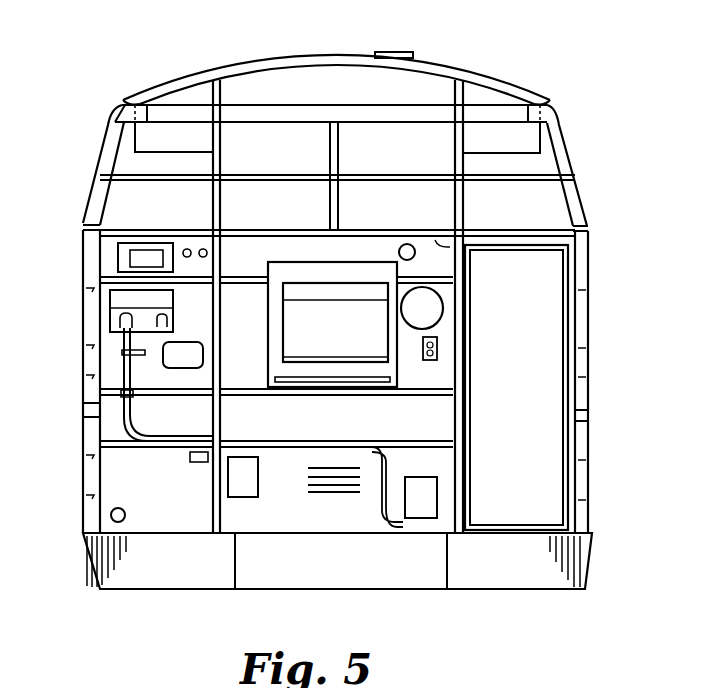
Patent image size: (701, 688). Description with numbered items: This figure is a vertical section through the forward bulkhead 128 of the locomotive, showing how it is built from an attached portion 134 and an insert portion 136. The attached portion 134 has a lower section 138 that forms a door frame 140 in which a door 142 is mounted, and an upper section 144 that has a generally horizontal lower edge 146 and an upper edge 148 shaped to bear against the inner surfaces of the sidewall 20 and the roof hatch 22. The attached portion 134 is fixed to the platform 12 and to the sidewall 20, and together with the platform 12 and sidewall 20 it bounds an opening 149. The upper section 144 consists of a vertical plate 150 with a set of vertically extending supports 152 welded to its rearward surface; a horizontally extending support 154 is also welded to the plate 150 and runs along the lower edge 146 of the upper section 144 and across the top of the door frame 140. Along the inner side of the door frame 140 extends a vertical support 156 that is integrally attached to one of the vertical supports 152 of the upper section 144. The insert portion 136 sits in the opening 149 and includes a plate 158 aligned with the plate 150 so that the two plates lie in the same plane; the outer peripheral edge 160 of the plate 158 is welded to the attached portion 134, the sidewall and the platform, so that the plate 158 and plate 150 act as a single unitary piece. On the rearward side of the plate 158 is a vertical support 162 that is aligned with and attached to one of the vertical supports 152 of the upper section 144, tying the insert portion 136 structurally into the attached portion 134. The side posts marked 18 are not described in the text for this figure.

The platform 12 is at (487, 573).
The side post 18 is at (83, 316).
The sidewall 20 is at (592, 398).
The roof hatch 22 is at (376, 52).
The forward bulkhead 128 is at (546, 160).
The attached portion 134 is at (157, 138).
The insert portion 136 is at (281, 520).
The lower section 138 is at (569, 278).
The door frame 140 is at (467, 277).
The door 142 is at (540, 475).
The upper section 144 is at (493, 163).
The lower edge 146 is at (100, 228).
The upper edge 148 is at (322, 66).
The opening 149 is at (450, 243).
The vertical plate 150 is at (263, 140).
The vertically extending supports 152 is at (221, 194).
The horizontally extending support 154 is at (547, 230).
The vertical support 156 is at (465, 388).
The plate 158 is at (164, 486).
The outer peripheral edge 160 is at (100, 433).
The vertical support 162 is at (214, 490).